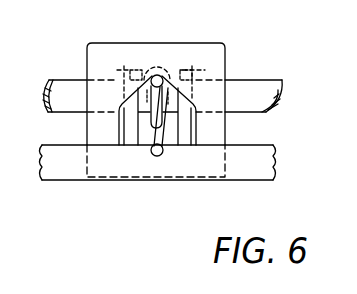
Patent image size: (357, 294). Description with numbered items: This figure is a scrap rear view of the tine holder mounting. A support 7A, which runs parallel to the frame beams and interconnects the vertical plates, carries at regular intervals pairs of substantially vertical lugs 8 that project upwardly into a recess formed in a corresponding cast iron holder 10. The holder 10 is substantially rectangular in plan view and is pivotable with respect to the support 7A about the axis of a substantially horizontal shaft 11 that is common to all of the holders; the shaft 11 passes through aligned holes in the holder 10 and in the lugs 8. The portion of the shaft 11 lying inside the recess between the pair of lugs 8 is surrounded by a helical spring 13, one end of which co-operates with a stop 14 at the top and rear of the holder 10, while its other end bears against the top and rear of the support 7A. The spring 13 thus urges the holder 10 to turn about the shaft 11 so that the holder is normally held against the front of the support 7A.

The holder 10 is at (231, 54).
The shaft 11 is at (254, 90).
The support 7A is at (70, 165).
The lugs 8 is at (130, 122).
The stop 14 is at (160, 75).
The helical spring 13 is at (159, 98).